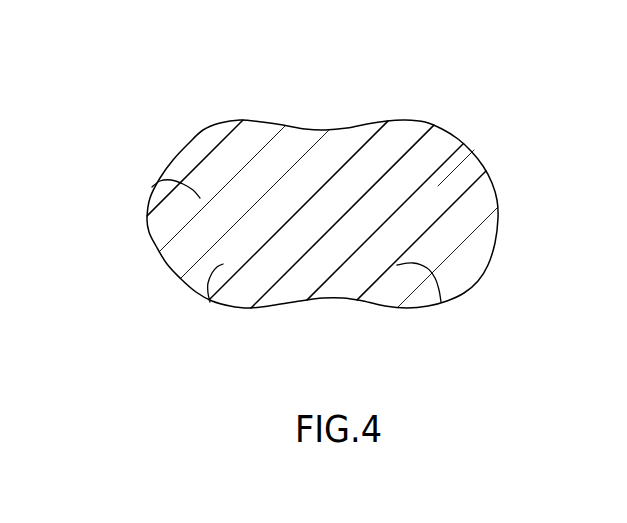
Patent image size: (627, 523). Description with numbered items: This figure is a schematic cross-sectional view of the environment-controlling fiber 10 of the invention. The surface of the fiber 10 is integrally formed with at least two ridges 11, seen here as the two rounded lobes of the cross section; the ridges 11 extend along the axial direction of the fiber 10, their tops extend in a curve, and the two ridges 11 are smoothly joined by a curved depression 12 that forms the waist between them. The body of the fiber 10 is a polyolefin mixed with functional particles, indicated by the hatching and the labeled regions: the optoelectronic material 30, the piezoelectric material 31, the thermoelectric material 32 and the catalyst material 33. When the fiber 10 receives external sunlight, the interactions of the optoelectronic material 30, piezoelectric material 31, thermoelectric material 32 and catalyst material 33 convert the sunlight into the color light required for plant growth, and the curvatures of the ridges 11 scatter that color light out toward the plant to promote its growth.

The fiber 10 is at (472, 257).
The ridges 11 is at (213, 123).
The curved depression 12 is at (332, 127).
The optoelectronic material 30 is at (474, 152).
The piezoelectric material 31 is at (152, 187).
The thermoelectric material 32 is at (210, 303).
The catalyst material 33 is at (441, 303).